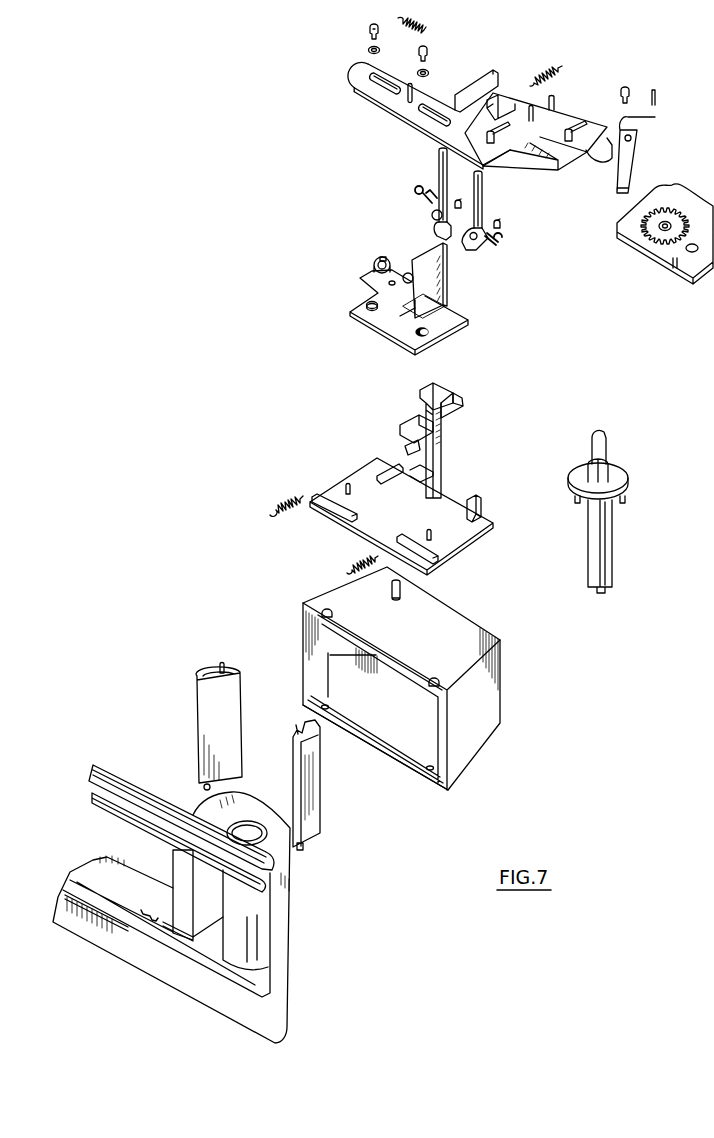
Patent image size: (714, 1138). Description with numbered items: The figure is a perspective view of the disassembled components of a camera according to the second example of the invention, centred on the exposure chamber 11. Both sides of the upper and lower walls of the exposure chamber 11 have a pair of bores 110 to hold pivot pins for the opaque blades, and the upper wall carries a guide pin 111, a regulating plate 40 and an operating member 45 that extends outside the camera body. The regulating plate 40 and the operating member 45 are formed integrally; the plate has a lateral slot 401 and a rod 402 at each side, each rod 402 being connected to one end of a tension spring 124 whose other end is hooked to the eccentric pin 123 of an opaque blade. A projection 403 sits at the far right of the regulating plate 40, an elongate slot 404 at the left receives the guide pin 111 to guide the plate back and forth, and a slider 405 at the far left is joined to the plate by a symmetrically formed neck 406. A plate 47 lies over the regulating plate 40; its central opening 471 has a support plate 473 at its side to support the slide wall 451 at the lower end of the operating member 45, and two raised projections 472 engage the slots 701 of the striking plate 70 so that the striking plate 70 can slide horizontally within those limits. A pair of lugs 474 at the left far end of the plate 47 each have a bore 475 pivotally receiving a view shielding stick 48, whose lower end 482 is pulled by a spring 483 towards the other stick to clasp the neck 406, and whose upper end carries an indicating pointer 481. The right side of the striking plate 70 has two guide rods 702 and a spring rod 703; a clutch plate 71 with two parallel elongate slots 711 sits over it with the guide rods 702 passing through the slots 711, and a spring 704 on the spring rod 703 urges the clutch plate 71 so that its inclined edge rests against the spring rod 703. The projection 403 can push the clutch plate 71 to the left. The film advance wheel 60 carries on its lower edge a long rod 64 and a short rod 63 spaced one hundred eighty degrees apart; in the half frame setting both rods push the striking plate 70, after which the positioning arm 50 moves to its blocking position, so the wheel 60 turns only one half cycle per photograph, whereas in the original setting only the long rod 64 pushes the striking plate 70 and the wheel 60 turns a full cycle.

The exposure chamber 11 is at (470, 760).
The bores 110 is at (434, 680).
The guide pin 111 is at (394, 600).
The eccentric pin 123 is at (221, 660).
The tension spring 124 is at (284, 503).
The regulating plate 40 is at (382, 528).
The lateral slot 401 is at (345, 520).
The rod 402 is at (347, 482).
The projection 403 is at (480, 488).
The elongate slot 404 is at (389, 466).
The slider 405 is at (413, 440).
The neck 406 is at (405, 446).
The operating member 45 is at (428, 387).
The slide wall 451 is at (460, 405).
The plate 47 is at (443, 322).
The opening 471 is at (405, 316).
The raised projections 472 is at (362, 303).
The support plate 473 is at (438, 280).
The lugs 474 is at (372, 262).
The bore 475 is at (388, 256).
The view shielding stick 48 is at (437, 230).
The indicating pointer 481 is at (483, 190).
The lower end 482 is at (462, 246).
The spring 483 is at (416, 190).
The positioning arm 50 is at (634, 158).
The film advance wheel 60 is at (618, 466).
The short rod 63 is at (573, 505).
The long rod 64 is at (626, 506).
The striking plate 70 is at (410, 108).
The slots 701 is at (362, 96).
The guide rods 702 is at (490, 148).
The spring rod 703 is at (552, 96).
The spring 704 is at (548, 66).
The clutch plate 71 is at (556, 162).
The elongate slots 711 is at (492, 100).